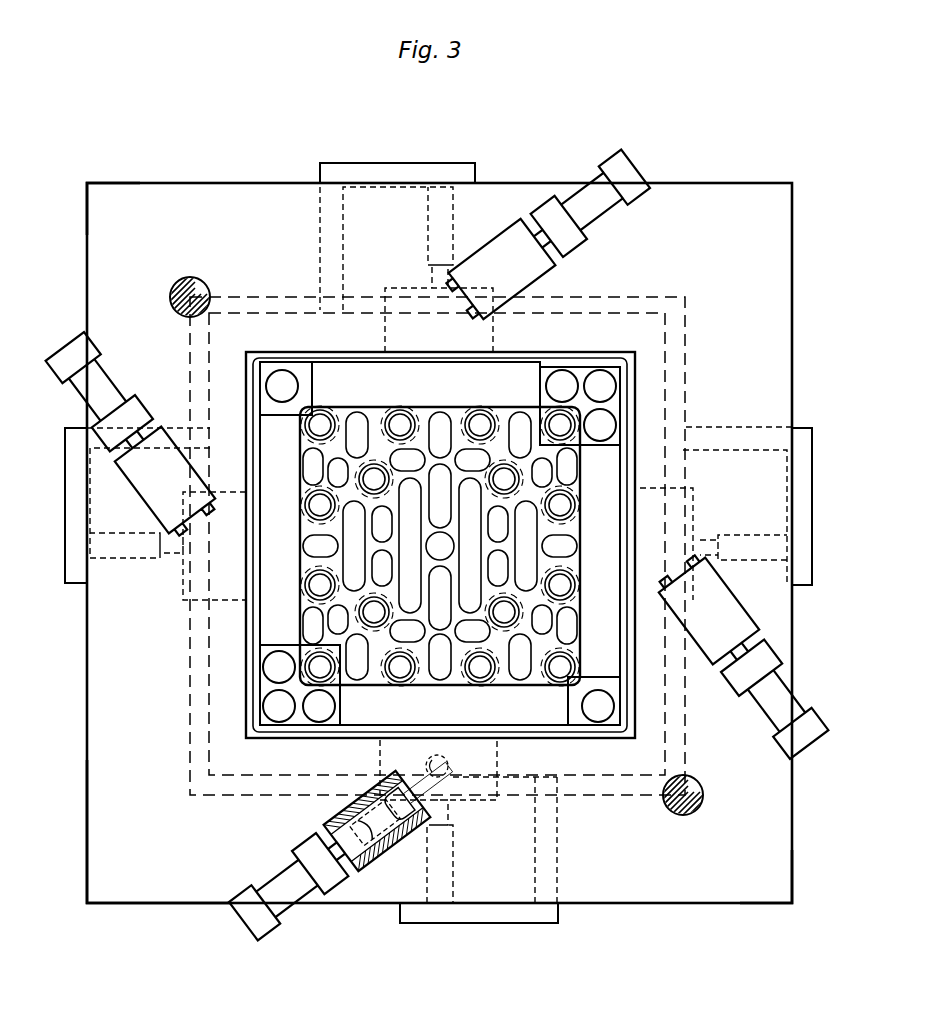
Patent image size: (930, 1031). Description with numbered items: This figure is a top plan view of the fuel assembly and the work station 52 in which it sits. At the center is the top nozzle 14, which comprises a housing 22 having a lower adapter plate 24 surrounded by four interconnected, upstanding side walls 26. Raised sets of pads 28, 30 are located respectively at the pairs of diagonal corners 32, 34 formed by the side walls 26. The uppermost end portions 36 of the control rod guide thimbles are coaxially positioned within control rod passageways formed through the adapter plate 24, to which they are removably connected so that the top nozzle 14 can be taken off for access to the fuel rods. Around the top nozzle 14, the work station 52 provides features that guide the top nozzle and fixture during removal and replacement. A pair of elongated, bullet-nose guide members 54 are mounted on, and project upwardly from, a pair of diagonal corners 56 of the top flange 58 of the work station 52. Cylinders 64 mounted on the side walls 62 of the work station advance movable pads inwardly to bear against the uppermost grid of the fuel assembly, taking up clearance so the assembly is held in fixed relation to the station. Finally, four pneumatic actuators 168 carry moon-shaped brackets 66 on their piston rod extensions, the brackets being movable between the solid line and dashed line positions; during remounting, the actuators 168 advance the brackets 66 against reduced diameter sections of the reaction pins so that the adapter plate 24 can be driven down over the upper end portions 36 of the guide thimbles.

The top nozzle 14 is at (566, 353).
The housing 22 is at (547, 732).
The adapter plate 24 is at (376, 408).
The side walls 26 is at (518, 365).
The pads 28 is at (612, 408).
The pads 30 is at (299, 380).
The diagonal corners 32 is at (622, 364).
The diagonal corners 34 is at (260, 364).
The uppermost end portions of the guide thimbles 36 is at (404, 411).
The work station 52 is at (180, 906).
The bullet-nose guide members 54 is at (187, 288).
The diagonal corners 56 is at (92, 204).
The top flange 58 is at (139, 841).
The side walls 62 is at (188, 667).
The cylinders 64 is at (138, 533).
The moon-shaped brackets 66 is at (440, 752).
The actuators 168 is at (596, 174).